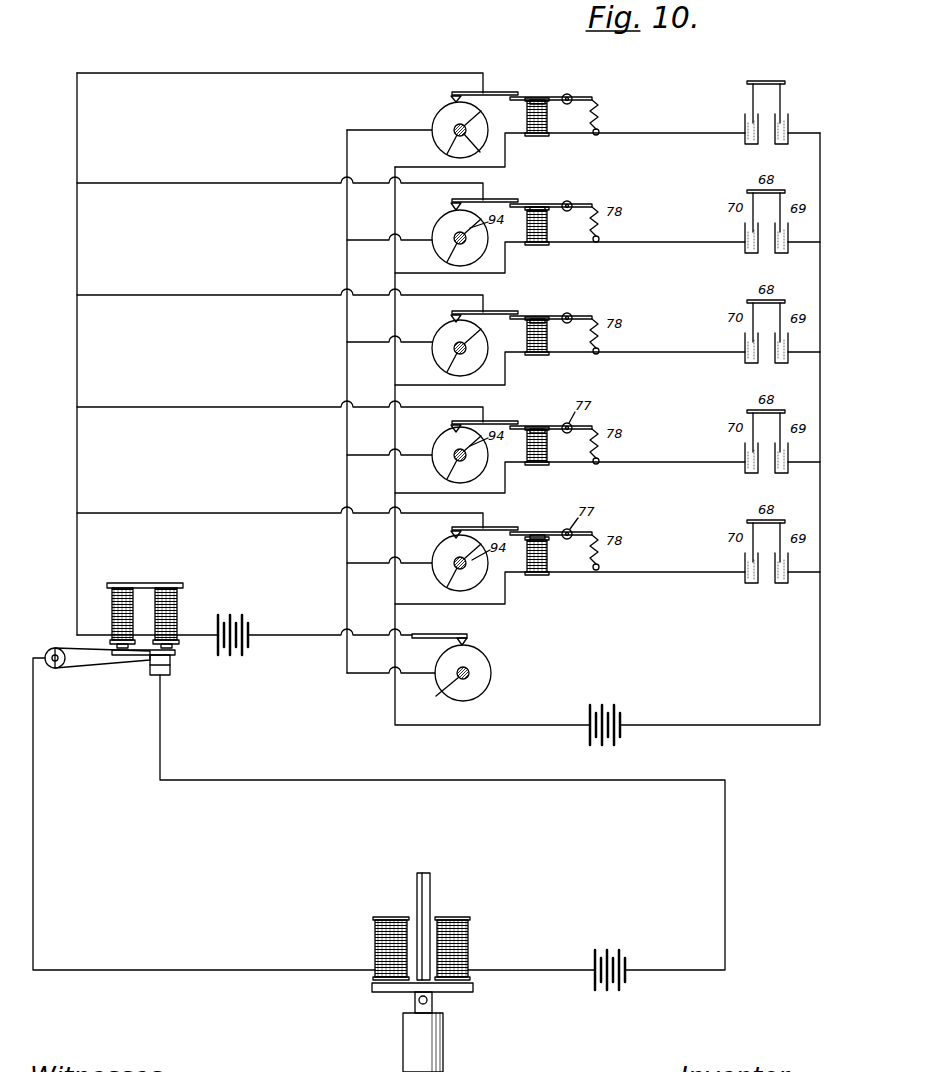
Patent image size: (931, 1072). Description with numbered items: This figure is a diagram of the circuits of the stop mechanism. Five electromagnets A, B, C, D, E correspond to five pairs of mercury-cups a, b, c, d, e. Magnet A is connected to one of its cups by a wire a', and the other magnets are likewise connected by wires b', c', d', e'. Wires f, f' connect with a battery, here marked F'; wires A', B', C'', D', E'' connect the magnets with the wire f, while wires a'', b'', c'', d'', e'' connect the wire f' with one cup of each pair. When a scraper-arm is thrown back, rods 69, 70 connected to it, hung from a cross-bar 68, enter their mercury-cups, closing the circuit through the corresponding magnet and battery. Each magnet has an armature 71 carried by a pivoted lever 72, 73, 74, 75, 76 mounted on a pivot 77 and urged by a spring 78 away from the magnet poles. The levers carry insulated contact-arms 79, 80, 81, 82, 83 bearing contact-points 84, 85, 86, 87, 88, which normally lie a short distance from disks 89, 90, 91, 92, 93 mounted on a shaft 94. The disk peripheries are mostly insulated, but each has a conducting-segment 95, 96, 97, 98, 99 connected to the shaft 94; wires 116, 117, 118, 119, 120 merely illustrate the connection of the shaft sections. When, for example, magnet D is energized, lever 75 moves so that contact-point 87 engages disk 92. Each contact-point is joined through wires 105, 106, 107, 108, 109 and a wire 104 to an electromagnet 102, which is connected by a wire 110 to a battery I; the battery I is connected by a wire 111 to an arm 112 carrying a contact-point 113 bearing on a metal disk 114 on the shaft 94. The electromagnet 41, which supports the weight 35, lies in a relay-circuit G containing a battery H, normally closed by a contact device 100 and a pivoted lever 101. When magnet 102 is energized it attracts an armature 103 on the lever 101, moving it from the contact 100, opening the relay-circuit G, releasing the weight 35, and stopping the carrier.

The weight 35 is at (432, 1036).
The electromagnet 41 is at (468, 940).
The cross bar 68 is at (766, 74).
The rod 69 is at (787, 115).
The rod 70 is at (750, 112).
The armature 71 is at (538, 97).
The pivoted lever 72 is at (567, 94).
The pivoted lever 73 is at (538, 204).
The pivoted lever 74 is at (538, 316).
The pivoted lever 75 is at (538, 426).
The pivoted lever 76 is at (540, 532).
The pivot 77 is at (569, 201).
The spring 78 is at (600, 112).
The contact-arm 79 is at (491, 92).
The contact-arm 80 is at (490, 199).
The contact-arm 81 is at (494, 311).
The contact-arm 82 is at (494, 421).
The contact-arm 83 is at (494, 527).
The contact-point 84 is at (451, 94).
The contact-point 85 is at (451, 201).
The contact-point 86 is at (451, 313).
The contact-point 87 is at (451, 423).
The contact-point 88 is at (451, 529).
The disk 89 is at (470, 158).
The disk 90 is at (478, 258).
The disk 91 is at (476, 368).
The disk 92 is at (476, 476).
The disk 93 is at (478, 584).
The shaft 94 is at (441, 692).
The conducting-segment 95 is at (460, 130).
The conducting-segment 96 is at (460, 239).
The conducting-segment 97 is at (460, 348).
The conducting-segment 98 is at (460, 455).
The conducting-segment 99 is at (460, 563).
The contact device 100 is at (170, 668).
The pivoted lever 101 is at (110, 659).
The electromagnet 102 is at (178, 603).
The armature 103 is at (145, 655).
The wire 104 is at (77, 548).
The wire 105 is at (280, 82).
The wire 106 is at (280, 183).
The wire 107 is at (280, 295).
The wire 108 is at (280, 406).
The wire 109 is at (280, 512).
The wire 110 is at (147, 628).
The wire 111 is at (330, 626).
The arm 112 is at (440, 630).
The contact-point 113 is at (466, 641).
The metal disk 114 is at (486, 666).
The wire 116 is at (389, 137).
The wire 117 is at (389, 249).
The wire 118 is at (389, 333).
The wire 119 is at (389, 446).
The wire 120 is at (389, 554).
The electromagnet A is at (544, 117).
The electromagnet B is at (544, 226).
The electromagnet C is at (544, 336).
The electromagnet D is at (544, 446).
The electromagnet E is at (544, 556).
The wire A' is at (461, 150).
The wire B' is at (461, 268).
The conductor C'' is at (461, 368).
The wire D' is at (461, 477).
The conductor E'' is at (461, 588).
The pair of mercury-cups a is at (766, 129).
The pair of mercury-cups b is at (766, 221).
The pair of mercury-cups c is at (766, 331).
The pair of mercury-cups d is at (766, 441).
The pair of mercury-cups e is at (766, 551).
The wire a' is at (646, 124).
The wire b' is at (646, 233).
The wire c' is at (646, 343).
The wire d' is at (646, 453).
The wire e' is at (646, 563).
The wire a'' is at (804, 145).
The wire b'' is at (804, 233).
The wire c'' is at (804, 343).
The wire d'' is at (804, 453).
The wire e'' is at (804, 563).
The wire f is at (403, 217).
The wire f' is at (806, 285).
The battery F' is at (609, 719).
The relay-circuit G is at (442, 822).
The battery H is at (615, 955).
The battery I is at (245, 618).